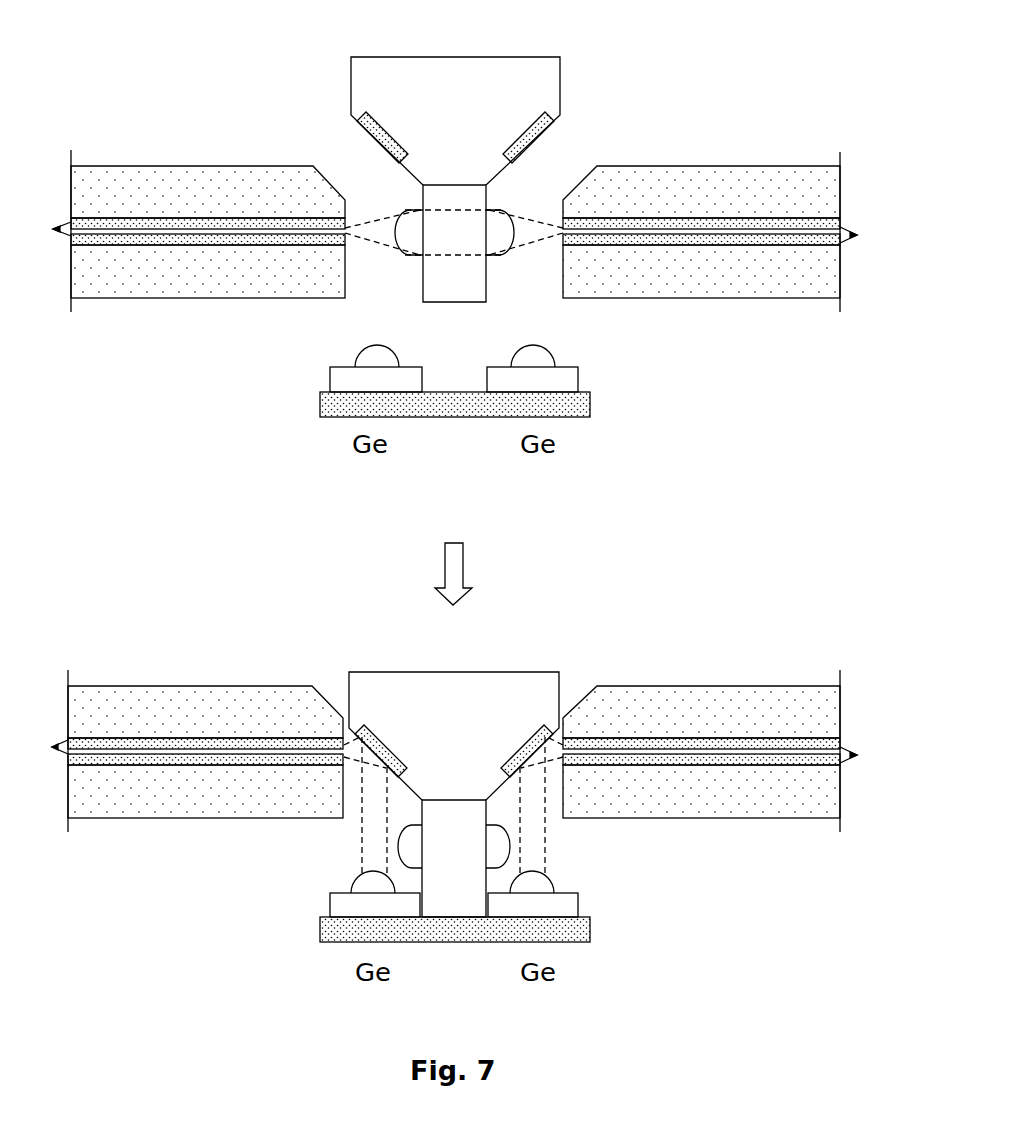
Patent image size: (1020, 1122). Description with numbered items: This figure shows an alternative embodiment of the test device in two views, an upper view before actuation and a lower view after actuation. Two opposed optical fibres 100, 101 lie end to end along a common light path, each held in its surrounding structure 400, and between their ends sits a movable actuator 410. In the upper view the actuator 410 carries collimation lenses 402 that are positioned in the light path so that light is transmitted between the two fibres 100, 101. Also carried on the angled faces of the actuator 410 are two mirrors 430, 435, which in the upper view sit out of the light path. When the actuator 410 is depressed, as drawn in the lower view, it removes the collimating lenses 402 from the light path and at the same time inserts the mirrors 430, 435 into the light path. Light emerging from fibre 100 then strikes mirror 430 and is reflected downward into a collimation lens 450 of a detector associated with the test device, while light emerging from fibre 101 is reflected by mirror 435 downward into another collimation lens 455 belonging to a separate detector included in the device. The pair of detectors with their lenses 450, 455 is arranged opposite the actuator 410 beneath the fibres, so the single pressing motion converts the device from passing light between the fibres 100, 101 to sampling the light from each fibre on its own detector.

The fibre 100 is at (192, 220).
The fibre 101 is at (752, 218).
The substrate 400 is at (152, 272).
The collimation lens 402 is at (410, 240).
The actuator 410 is at (457, 78).
The mirror 430 is at (357, 125).
The mirror 435 is at (552, 125).
The collimation lens 450 is at (362, 360).
The collimation lens 455 is at (550, 360).